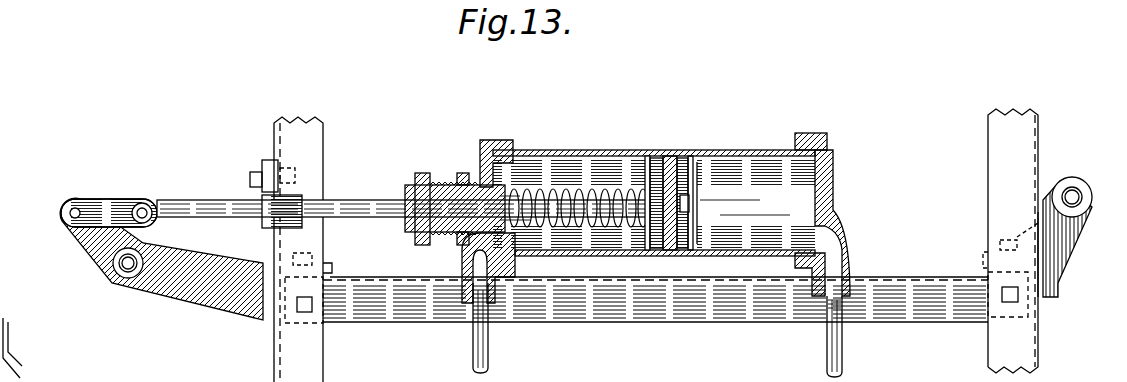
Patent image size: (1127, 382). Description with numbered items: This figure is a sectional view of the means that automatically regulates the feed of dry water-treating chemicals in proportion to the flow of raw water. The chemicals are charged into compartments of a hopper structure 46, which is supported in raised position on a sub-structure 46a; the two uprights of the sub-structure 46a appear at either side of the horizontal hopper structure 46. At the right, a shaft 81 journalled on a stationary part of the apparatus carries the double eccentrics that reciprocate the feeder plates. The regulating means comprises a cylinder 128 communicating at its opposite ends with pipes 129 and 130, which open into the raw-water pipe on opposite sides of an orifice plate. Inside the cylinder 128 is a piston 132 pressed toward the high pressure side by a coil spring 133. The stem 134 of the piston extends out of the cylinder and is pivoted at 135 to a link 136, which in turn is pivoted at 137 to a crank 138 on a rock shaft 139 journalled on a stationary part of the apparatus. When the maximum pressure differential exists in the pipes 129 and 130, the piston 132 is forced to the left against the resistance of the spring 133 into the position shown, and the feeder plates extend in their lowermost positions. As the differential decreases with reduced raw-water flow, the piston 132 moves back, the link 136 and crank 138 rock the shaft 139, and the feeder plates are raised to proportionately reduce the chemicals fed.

The hopper structure 46 is at (656, 327).
The sub-structure 46a is at (1002, 168).
The shaft 81 is at (1074, 192).
The cylinder 128 is at (630, 150).
The pipe 129 is at (486, 350).
The pipe 130 is at (828, 348).
The piston 132 is at (683, 165).
The coil spring 133 is at (542, 197).
The stem 134 is at (362, 210).
The pivot 135 is at (143, 210).
The link 136 is at (110, 203).
The pivot 137 is at (73, 210).
The crank 138 is at (95, 242).
The rock shaft 139 is at (126, 266).